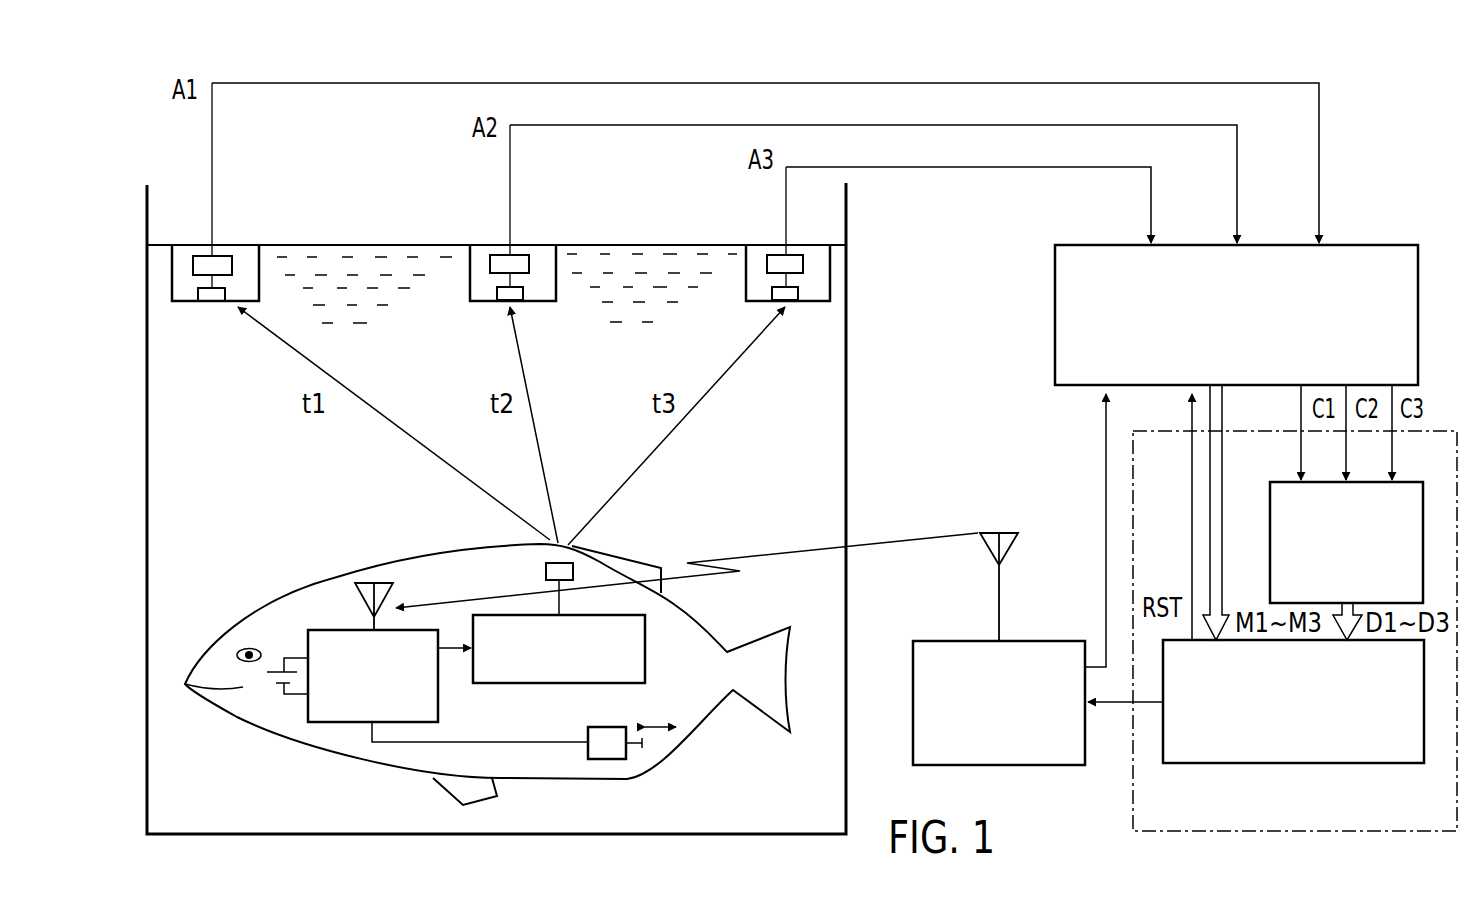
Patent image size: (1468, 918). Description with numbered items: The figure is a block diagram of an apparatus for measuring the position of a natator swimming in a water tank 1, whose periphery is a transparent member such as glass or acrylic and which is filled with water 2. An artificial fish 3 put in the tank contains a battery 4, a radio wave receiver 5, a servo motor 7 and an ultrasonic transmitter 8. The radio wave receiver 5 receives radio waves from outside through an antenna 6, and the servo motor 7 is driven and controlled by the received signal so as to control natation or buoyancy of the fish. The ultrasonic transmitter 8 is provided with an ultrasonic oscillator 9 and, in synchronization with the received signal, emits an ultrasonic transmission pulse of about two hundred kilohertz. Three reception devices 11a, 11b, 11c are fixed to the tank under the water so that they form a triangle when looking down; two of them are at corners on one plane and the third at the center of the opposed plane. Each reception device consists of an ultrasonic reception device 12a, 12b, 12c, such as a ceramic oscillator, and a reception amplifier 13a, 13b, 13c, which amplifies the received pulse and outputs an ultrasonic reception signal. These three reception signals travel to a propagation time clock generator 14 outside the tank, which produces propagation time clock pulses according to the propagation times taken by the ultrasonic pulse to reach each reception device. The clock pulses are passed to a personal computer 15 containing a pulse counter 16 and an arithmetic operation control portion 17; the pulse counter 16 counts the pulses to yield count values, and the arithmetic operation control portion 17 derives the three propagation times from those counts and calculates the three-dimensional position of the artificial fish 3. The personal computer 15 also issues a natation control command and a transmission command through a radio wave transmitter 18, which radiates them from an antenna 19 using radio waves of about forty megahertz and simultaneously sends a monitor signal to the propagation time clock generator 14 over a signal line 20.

The water tank 1 is at (848, 305).
The water 2 is at (345, 250).
The artificial fish 3 is at (220, 707).
The battery 4 is at (280, 688).
The radio wave receiver 5 is at (340, 722).
The antenna 6 is at (355, 590).
The servo motor 7 is at (606, 760).
The ultrasonic transmitter 8 is at (648, 655).
The ultrasonic oscillator 9 is at (546, 572).
The reception device 11a is at (198, 250).
The reception device 11b is at (496, 250).
The reception device 11c is at (773, 250).
The ultrasonic reception device 12a is at (210, 304).
The ultrasonic reception device 12b is at (502, 301).
The ultrasonic reception device 12c is at (793, 301).
The reception amplifier 13a is at (224, 250).
The reception amplifier 13b is at (520, 250).
The reception amplifier 13c is at (797, 250).
The propagation time clock generator 14 is at (1091, 245).
The personal computer 15 is at (1133, 803).
The pulse counter 16 is at (1270, 500).
The arithmetic operation control portion 17 is at (1247, 765).
The radio wave transmitter 18 is at (1043, 641).
The antenna 19 is at (988, 533).
The signal line 20 is at (1106, 471).